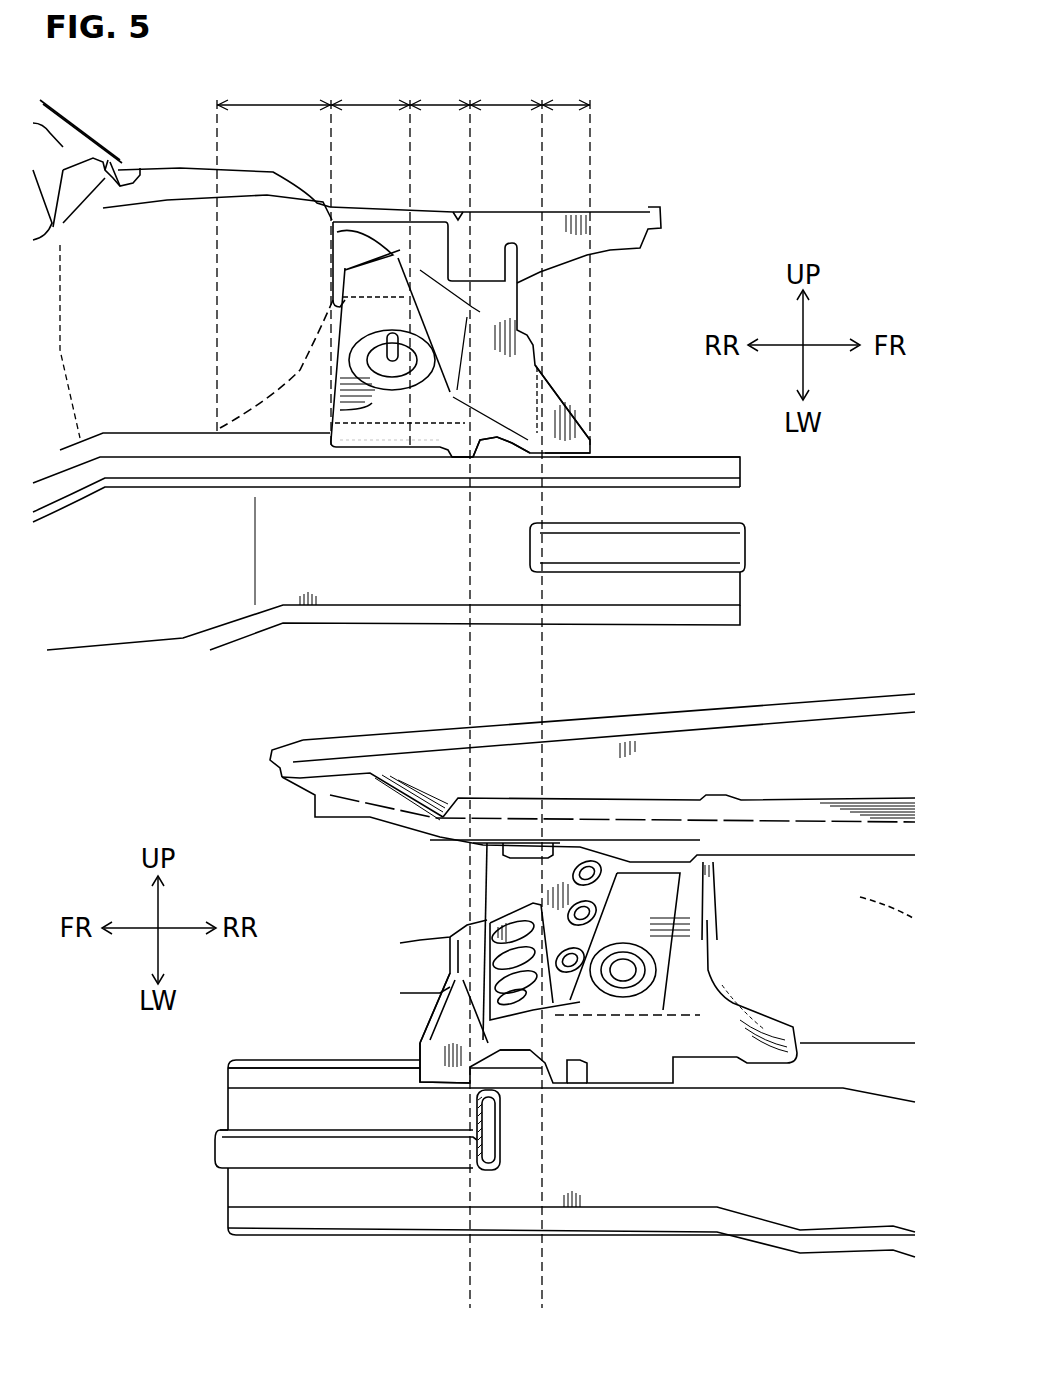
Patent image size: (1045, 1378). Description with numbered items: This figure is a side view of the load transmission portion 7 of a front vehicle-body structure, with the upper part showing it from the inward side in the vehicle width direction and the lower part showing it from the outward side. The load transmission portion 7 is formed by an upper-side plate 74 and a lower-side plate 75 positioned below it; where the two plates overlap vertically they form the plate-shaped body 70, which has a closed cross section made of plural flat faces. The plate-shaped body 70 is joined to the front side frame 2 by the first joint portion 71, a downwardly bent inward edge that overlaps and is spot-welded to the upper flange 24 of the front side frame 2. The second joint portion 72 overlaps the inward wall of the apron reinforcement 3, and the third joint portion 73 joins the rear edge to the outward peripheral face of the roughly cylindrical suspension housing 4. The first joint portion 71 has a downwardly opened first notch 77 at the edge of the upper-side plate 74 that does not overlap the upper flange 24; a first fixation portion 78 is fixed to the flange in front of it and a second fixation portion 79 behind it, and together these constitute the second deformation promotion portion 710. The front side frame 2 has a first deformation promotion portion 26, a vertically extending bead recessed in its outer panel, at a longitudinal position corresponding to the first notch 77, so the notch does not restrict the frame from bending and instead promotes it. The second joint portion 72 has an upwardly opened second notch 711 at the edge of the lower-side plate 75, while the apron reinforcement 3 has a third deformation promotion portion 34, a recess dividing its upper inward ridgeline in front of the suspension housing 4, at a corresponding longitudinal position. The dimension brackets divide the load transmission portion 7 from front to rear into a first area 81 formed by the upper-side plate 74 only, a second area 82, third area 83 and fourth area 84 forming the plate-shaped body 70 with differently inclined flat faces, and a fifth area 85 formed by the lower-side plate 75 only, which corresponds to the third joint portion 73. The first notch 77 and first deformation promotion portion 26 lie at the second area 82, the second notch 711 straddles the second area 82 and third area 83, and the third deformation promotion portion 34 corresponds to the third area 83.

The front side frame 2 is at (401, 628).
The apron reinforcement 3 is at (628, 210).
The suspension housing 4 is at (160, 168).
The load transmission portion 7 is at (385, 910).
The upper flange 24 is at (707, 456).
The first deformation promotion portion 26 is at (492, 1172).
The third deformation promotion portion 34 is at (457, 211).
The plate-shaped body 70 is at (345, 410).
The first joint portion 71 is at (592, 447).
The second joint portion 72 is at (507, 270).
The third joint portion 73 is at (298, 345).
The upper-side plate 74 is at (372, 440).
The lower-side plate 75 is at (345, 250).
The first notch 77 is at (497, 440).
The first fixation portion 78 is at (560, 450).
The second fixation portion 79 is at (455, 452).
The second deformation promotion portion 710 is at (582, 1140).
The second notch 711 is at (490, 278).
The first area 81 is at (566, 88).
The second area 82 is at (506, 88).
The third area 83 is at (440, 88).
The fourth area 84 is at (370, 88).
The fifth area 85 is at (274, 88).